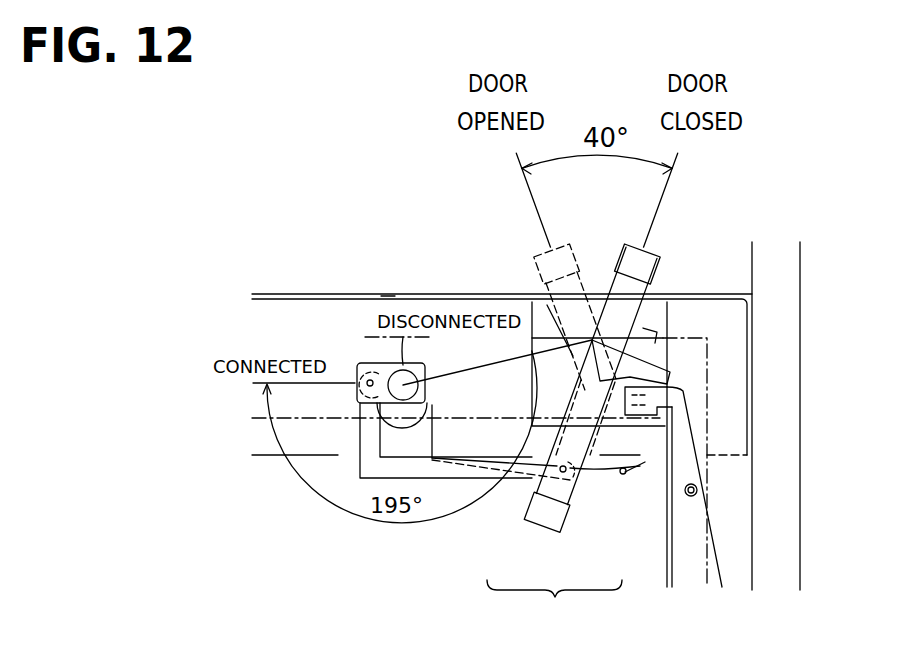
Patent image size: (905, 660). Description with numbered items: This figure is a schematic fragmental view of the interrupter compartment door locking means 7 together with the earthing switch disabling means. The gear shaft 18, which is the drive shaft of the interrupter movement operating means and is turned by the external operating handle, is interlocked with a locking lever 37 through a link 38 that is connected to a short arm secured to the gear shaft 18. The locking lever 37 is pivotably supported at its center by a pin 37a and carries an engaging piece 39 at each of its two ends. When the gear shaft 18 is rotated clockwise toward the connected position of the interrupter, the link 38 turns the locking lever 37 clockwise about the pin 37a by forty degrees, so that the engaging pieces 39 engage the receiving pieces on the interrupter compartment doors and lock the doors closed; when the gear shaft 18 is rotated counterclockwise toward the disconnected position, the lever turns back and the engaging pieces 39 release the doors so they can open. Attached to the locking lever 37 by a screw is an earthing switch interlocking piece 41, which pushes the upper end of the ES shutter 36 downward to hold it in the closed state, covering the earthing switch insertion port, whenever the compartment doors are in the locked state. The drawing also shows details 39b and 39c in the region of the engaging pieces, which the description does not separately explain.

The interrupter compartment door locking means 7 is at (567, 630).
The gear shaft 18 is at (387, 307).
The ES shutter 36 is at (707, 425).
The locking lever 37 is at (610, 288).
The pin 37a is at (600, 374).
The link 38 is at (447, 480).
The engaging piece 39 is at (655, 247).
The pin 39b is at (625, 477).
The link 39c is at (575, 490).
The earthing switch interlocking piece 41 is at (645, 365).